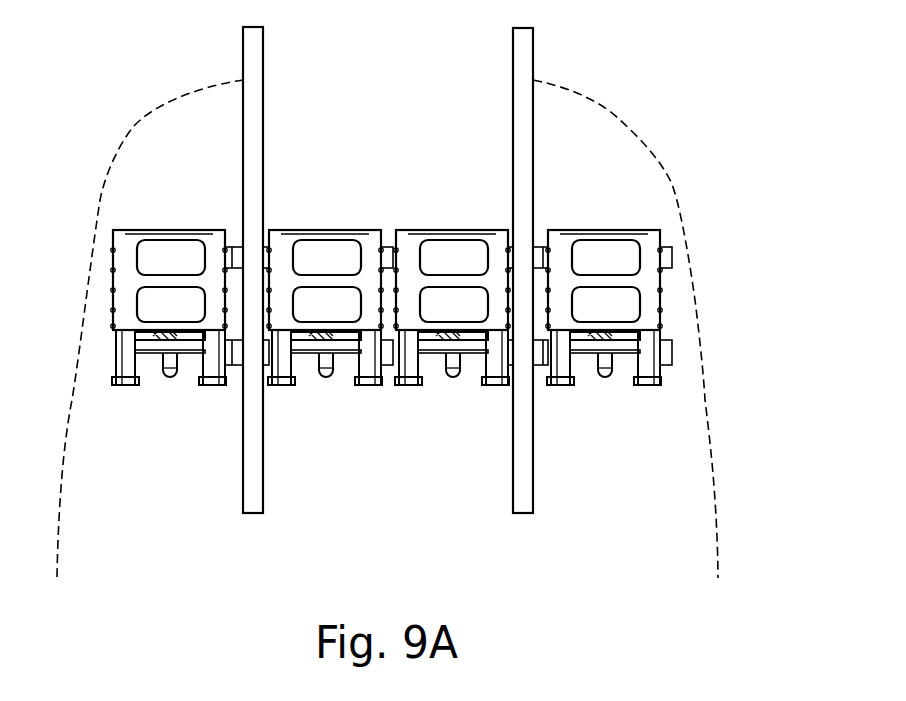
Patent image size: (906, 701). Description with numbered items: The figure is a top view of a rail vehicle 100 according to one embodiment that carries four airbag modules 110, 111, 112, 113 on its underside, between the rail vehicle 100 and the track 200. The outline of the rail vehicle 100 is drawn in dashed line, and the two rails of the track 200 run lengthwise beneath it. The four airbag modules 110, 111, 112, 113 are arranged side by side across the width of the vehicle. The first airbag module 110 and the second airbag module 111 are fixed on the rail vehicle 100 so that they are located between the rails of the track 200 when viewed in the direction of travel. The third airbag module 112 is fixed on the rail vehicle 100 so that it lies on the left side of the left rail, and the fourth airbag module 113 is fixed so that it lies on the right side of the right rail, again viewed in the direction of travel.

The rail vehicle 100 is at (672, 174).
The track 200 is at (242, 57).
The first airbag module 110 is at (317, 390).
The second airbag module 111 is at (388, 425).
The third airbag module 112 is at (386, 470).
The fourth airbag module 113 is at (403, 428).